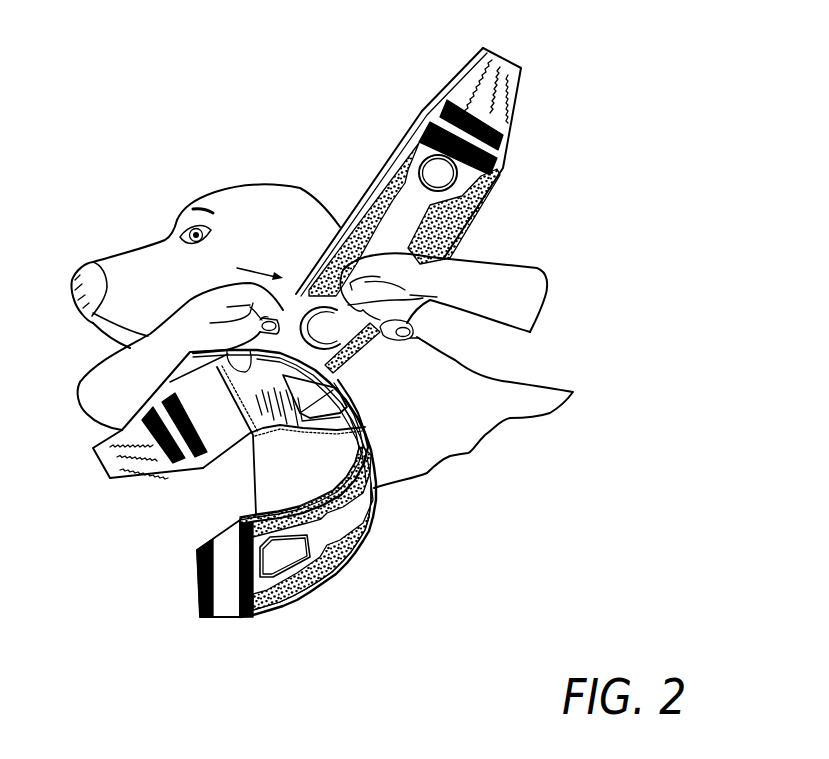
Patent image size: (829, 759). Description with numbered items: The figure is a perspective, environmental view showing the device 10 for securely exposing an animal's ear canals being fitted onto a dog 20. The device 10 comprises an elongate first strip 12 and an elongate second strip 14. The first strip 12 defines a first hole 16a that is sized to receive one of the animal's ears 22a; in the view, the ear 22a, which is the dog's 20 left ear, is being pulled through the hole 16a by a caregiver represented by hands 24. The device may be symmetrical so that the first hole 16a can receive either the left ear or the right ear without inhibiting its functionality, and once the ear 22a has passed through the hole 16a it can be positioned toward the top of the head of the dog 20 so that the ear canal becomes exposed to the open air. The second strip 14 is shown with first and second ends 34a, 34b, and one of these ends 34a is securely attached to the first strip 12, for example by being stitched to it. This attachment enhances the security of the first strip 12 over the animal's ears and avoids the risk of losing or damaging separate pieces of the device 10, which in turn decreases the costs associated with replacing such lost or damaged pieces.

The device 10 is at (328, 131).
The first strip 12 is at (474, 208).
The second strip 14 is at (367, 430).
The first hole 16a is at (338, 342).
The dog 20 is at (268, 228).
The animal's ear 22a is at (337, 330).
The hands 24 is at (503, 302).
The first end 34a is at (262, 420).
The second end 34b is at (222, 551).